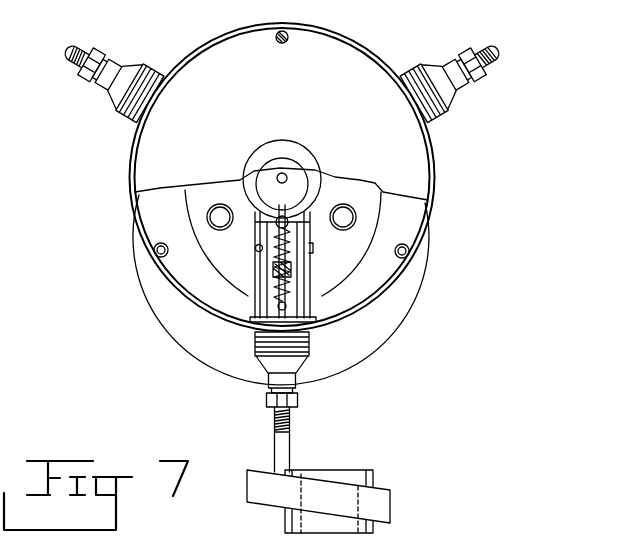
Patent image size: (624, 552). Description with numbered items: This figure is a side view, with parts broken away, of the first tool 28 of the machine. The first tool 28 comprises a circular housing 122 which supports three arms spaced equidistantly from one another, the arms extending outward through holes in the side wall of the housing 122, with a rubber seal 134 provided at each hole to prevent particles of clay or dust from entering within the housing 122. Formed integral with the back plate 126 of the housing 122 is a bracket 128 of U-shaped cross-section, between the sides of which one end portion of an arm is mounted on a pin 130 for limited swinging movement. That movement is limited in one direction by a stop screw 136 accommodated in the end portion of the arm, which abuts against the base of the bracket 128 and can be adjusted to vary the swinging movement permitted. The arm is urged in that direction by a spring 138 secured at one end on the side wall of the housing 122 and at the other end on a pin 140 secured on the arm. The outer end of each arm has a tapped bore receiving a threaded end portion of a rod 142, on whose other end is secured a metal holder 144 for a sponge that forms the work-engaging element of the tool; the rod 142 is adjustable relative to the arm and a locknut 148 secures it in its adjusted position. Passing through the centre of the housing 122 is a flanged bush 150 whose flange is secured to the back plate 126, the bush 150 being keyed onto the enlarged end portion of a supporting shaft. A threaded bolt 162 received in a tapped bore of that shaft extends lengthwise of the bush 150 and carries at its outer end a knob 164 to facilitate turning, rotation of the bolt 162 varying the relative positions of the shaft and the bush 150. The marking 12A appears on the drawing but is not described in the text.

The first tool 28 is at (152, 333).
The circular housing 122 is at (130, 162).
The spring anchor 12A is at (279, 312).
The back plate 126 is at (240, 253).
The bracket 128 is at (306, 268).
The pin 130 is at (313, 245).
The rubber seal 134 is at (120, 102).
The stop screw 136 is at (266, 278).
The spring 138 is at (288, 296).
The pin 140 is at (279, 221).
The rod 142 is at (76, 54).
The metal holder 144 is at (282, 497).
The locknut 148 is at (104, 61).
The flanged bush 150 is at (303, 171).
The threaded bolt 162 is at (285, 167).
The knob 164 is at (297, 143).